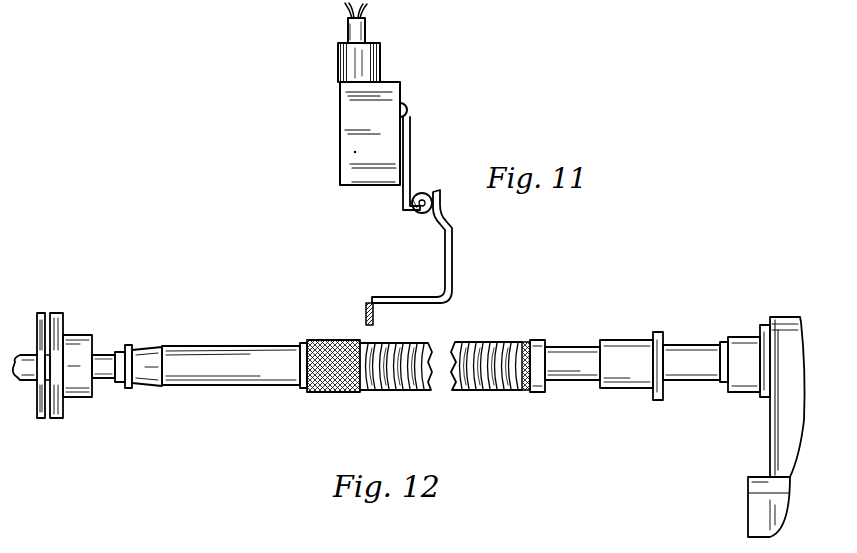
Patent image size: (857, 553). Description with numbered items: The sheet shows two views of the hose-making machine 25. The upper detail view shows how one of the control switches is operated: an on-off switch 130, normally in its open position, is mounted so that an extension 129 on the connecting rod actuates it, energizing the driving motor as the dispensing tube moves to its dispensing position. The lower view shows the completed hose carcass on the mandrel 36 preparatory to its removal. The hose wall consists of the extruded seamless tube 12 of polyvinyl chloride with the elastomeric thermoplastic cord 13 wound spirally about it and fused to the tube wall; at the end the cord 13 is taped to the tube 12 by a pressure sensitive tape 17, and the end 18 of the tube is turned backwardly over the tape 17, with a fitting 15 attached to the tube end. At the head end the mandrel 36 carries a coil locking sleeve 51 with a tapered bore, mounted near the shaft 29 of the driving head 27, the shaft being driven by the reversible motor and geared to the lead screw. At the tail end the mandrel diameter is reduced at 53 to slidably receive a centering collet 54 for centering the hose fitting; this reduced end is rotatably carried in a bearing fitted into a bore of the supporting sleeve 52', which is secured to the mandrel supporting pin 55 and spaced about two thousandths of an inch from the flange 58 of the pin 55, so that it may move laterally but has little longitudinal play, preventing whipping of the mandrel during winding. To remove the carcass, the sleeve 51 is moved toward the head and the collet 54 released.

In FIG. 11, the on-off switch 130 is at (340, 146).
In FIG. 11, the extension 129 is at (452, 262).
In FIG. 12, the mandrel supporting pin 55 is at (20, 352).
In FIG. 12, the flange 58 is at (44, 420).
In FIG. 12, the supporting sleeve 52' is at (89, 397).
In FIG. 12, the reduced end 53 is at (118, 384).
In FIG. 12, the centering collet 54 is at (145, 386).
In FIG. 12, the fitting 15 is at (277, 388).
In FIG. 12, the pressure sensitive tape 17 is at (333, 393).
In FIG. 12, the extruded seamless tube 12 is at (378, 392).
In FIG. 12, the elastomeric thermoplastic cord 13 is at (455, 392).
In FIG. 12, the folded end of tube 18 is at (537, 393).
In FIG. 12, the mandrel 36 is at (555, 346).
In FIG. 12, the coil locking sleeve 51 is at (620, 390).
In FIG. 12, the shaft 29 is at (743, 337).
In FIG. 12, the driving head 27 is at (788, 317).
In FIG. 12, the machine 25 is at (748, 509).